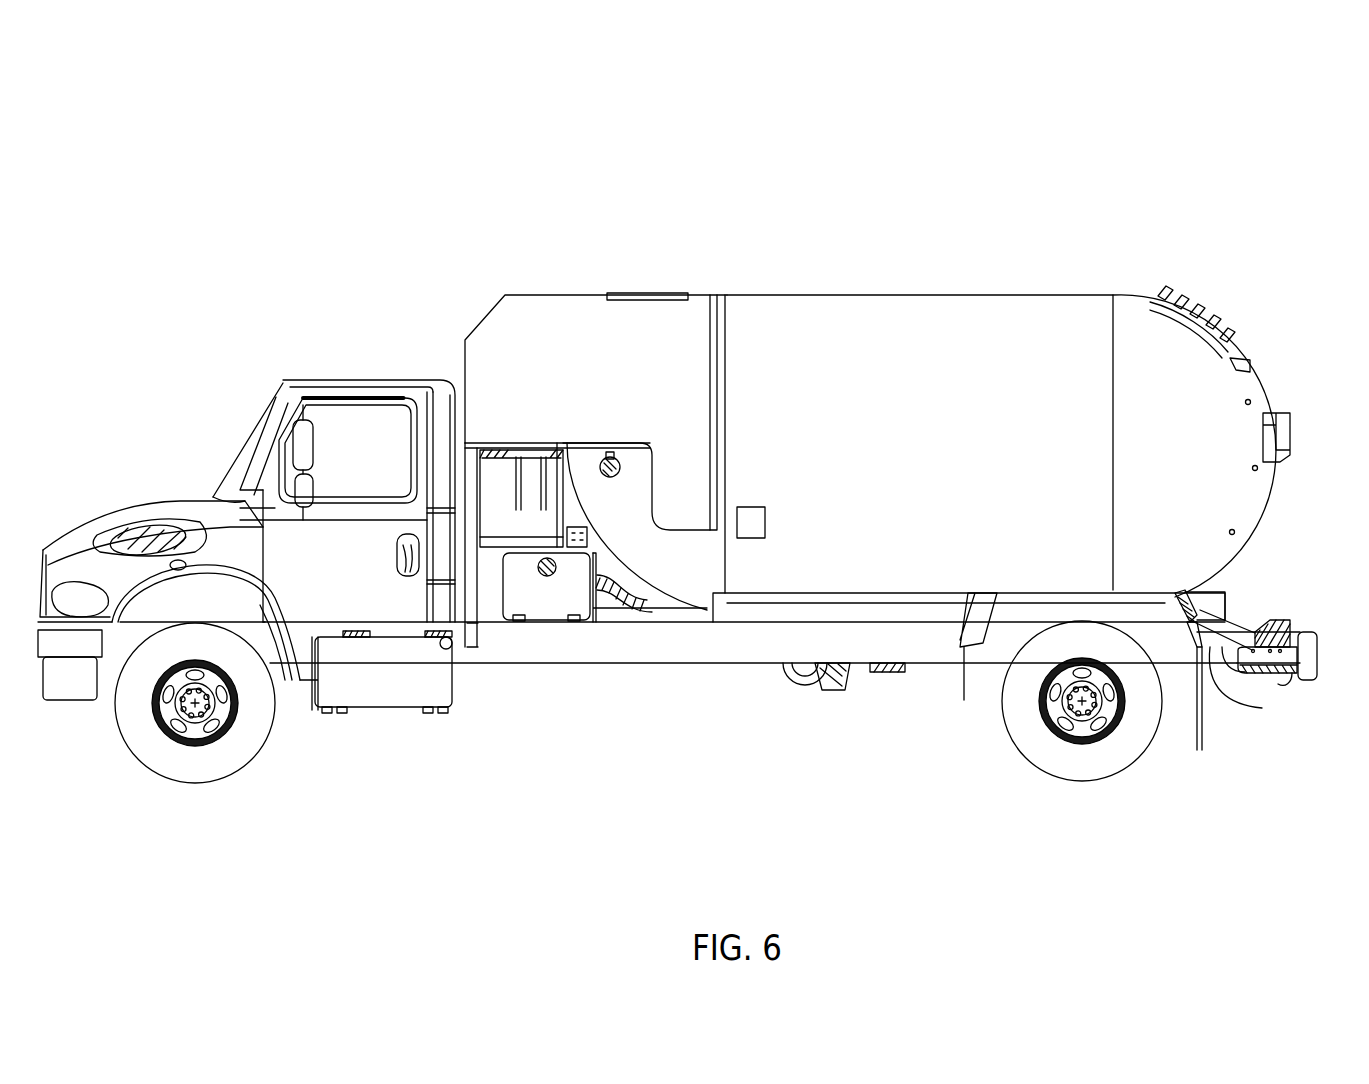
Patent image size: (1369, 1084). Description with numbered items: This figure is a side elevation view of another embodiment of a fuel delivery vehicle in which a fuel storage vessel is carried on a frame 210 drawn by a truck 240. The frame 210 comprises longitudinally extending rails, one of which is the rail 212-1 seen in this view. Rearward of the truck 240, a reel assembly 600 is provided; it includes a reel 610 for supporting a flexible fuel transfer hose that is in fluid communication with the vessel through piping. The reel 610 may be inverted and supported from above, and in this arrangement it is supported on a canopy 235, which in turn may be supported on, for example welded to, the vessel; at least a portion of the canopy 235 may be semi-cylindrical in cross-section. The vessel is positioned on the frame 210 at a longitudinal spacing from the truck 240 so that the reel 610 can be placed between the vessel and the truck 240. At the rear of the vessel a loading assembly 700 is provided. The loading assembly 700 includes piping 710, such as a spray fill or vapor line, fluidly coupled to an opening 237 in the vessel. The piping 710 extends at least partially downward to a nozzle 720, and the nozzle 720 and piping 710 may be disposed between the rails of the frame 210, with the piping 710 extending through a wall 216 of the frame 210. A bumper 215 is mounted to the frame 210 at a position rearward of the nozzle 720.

The truck 240 is at (194, 342).
The reel assembly 600 is at (463, 257).
The canopy 235 is at (557, 328).
The loading assembly 700 is at (1336, 555).
The opening 237 is at (1187, 596).
The piping 710 is at (1240, 622).
The nozzle 720 is at (1295, 624).
The bumper 215 is at (1357, 636).
The rail 212-1 is at (1262, 708).
The wall 216 is at (1203, 647).
The frame 210 is at (657, 668).
The reel 610 is at (520, 487).